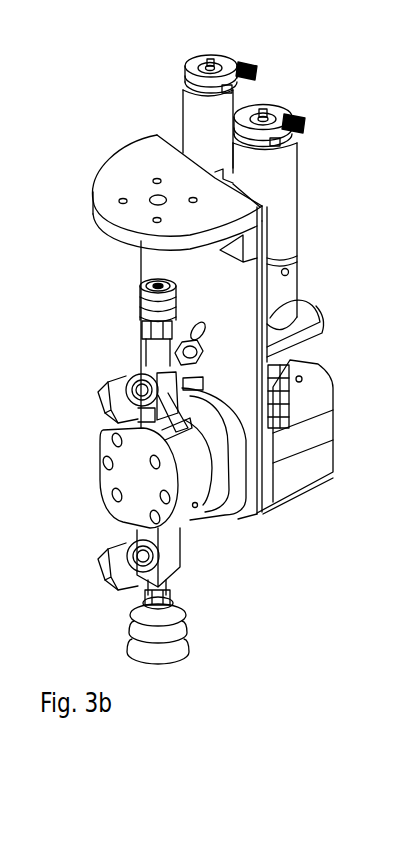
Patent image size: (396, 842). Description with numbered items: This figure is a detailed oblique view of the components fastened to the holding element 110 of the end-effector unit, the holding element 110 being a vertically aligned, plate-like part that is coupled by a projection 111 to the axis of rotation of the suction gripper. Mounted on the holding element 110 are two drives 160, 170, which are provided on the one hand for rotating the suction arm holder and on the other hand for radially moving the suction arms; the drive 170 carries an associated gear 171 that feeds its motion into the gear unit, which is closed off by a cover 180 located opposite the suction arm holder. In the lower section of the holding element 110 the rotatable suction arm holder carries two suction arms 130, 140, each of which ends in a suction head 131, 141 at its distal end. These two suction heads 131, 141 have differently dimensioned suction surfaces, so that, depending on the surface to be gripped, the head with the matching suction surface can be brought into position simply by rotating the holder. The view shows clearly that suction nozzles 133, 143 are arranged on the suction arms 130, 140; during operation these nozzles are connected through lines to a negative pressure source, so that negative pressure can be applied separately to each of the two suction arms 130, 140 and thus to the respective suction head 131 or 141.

The holding element 110 is at (237, 320).
The projection 111 is at (140, 163).
The suction arm 130 is at (145, 345).
The suction head 131 is at (143, 290).
The suction nozzle 133 is at (120, 403).
The suction arm 140 is at (170, 543).
The suction head 141 is at (162, 618).
The suction nozzle 143 is at (127, 570).
The drive 160 is at (212, 123).
The drive 170 is at (270, 180).
The gear 171 is at (277, 307).
The cover 180 is at (305, 470).